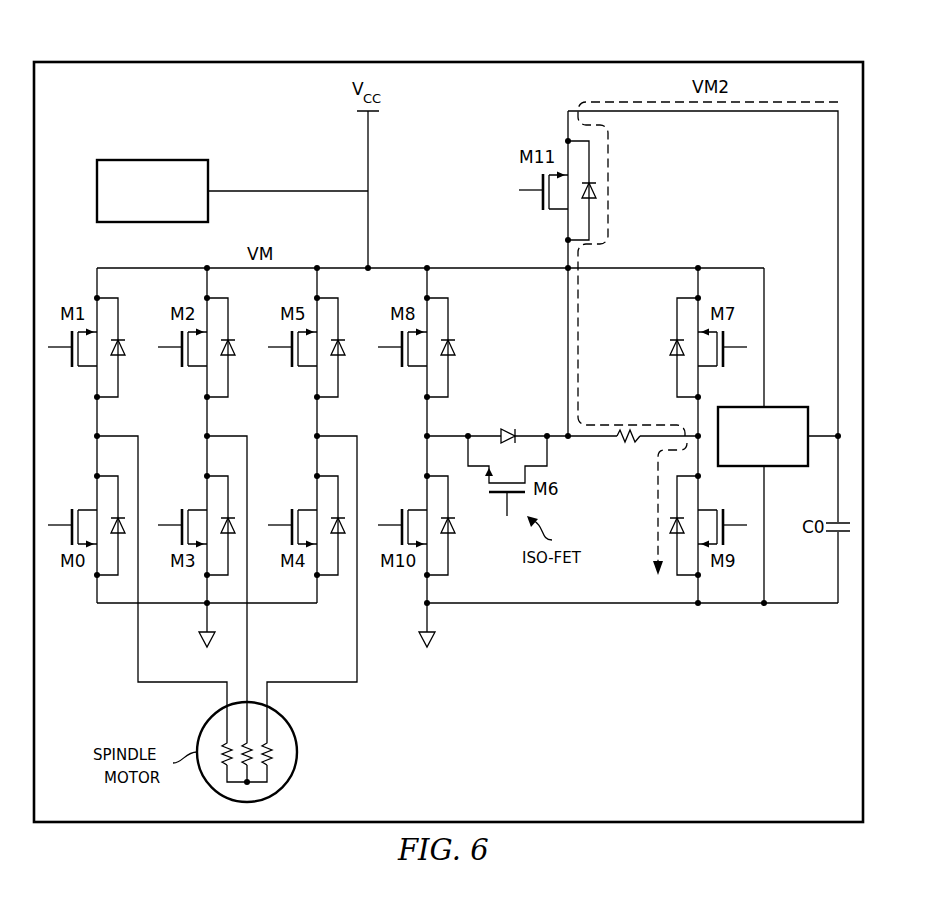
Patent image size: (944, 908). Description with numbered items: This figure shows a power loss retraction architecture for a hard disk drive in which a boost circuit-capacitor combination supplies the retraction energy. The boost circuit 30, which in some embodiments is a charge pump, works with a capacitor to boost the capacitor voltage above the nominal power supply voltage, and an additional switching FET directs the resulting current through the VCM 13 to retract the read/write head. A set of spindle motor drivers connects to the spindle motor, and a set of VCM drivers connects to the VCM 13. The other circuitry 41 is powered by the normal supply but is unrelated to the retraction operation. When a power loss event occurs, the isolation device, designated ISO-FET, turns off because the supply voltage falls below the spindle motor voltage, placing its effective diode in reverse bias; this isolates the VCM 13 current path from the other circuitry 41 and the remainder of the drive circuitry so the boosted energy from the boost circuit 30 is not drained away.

The other circuitry 41 is at (152, 160).
The boost circuit 30 is at (788, 406).
The VCM 13 is at (628, 446).